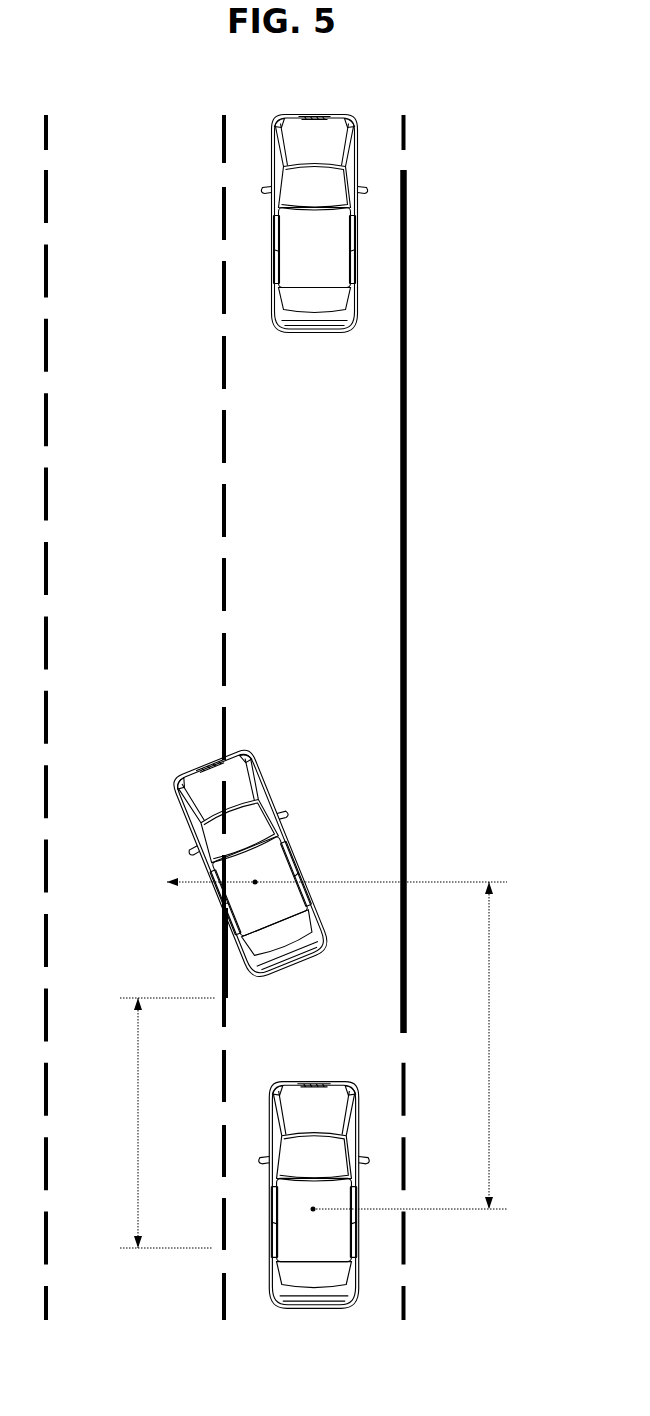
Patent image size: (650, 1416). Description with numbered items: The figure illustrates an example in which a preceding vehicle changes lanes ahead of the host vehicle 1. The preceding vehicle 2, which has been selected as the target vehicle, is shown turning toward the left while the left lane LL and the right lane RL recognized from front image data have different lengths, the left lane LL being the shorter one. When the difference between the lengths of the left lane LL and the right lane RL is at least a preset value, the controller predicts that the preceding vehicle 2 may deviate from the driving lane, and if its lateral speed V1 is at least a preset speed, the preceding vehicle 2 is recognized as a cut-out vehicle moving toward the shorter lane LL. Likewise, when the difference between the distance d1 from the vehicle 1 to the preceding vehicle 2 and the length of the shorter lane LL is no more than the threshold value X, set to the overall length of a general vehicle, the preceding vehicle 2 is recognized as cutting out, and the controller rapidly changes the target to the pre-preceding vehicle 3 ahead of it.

The vehicle 1 is at (350, 1272).
The preceding vehicle 2 is at (276, 817).
The pre-preceding vehicle 3 is at (353, 226).
The right lane RL is at (406, 805).
The left lane LL is at (222, 948).
The lateral speed V1 is at (321, 882).
The distance d1 is at (421, 1045).
The threshold value X is at (161, 1123).